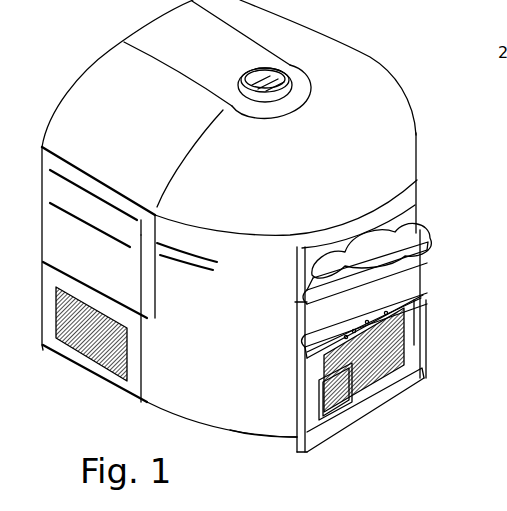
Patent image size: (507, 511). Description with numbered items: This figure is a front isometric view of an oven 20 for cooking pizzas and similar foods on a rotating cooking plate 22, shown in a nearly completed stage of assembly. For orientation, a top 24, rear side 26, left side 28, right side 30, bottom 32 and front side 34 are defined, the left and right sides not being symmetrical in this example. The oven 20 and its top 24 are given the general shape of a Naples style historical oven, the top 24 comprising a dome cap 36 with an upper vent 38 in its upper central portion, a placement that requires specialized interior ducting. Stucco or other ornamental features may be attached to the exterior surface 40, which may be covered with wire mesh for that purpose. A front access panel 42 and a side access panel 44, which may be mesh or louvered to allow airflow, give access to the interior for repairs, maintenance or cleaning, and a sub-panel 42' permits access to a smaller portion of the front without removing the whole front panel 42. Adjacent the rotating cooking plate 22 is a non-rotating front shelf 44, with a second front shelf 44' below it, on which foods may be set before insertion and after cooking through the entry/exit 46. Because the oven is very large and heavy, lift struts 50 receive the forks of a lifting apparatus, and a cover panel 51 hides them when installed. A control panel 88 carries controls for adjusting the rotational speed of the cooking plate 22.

The oven 20 is at (403, 57).
The rotating cooking plate 22 is at (431, 247).
The top 24 is at (303, 67).
The rear side 26 is at (58, 103).
The left side 28 is at (161, 407).
The right side 30 is at (399, 102).
The bottom 32 is at (252, 437).
The front side 34 is at (417, 328).
The dome cap 36 is at (397, 123).
The upper vent 38 is at (287, 75).
The exterior surface 40 is at (421, 173).
The front access panel 42 is at (390, 400).
The sub-panel 42' is at (344, 428).
The side access panel / front shelf 44 is at (266, 327).
The second front shelf 44' is at (341, 330).
The entry/exit 46 is at (399, 221).
The lift struts 50 is at (329, 438).
The cover panel 51 is at (297, 452).
The control panel 88 is at (347, 327).